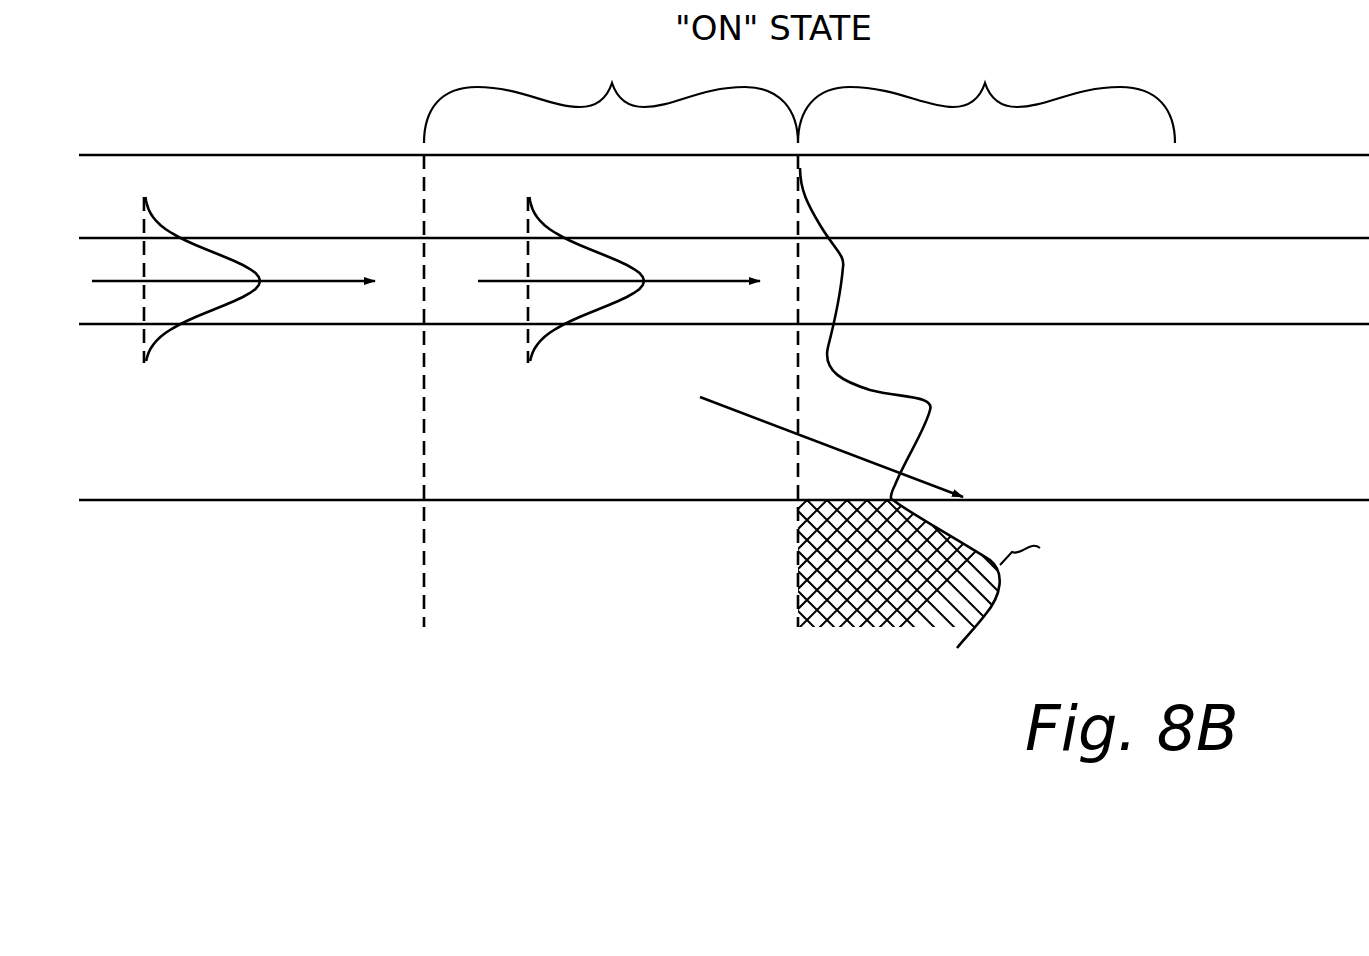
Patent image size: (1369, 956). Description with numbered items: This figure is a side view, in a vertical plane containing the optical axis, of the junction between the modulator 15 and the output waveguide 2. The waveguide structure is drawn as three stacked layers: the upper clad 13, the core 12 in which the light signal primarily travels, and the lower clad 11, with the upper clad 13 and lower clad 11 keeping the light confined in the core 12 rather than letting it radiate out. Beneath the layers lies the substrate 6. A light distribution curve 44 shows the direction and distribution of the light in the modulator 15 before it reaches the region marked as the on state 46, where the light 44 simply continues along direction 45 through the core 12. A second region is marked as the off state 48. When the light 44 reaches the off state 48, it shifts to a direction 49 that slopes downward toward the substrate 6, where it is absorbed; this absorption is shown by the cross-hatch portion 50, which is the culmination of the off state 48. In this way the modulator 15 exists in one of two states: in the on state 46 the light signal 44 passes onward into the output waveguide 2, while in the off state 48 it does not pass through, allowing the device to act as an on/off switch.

The modulator 15 is at (232, 153).
The upper clad 13 is at (1212, 215).
The core 12 is at (1212, 295).
The lower clad 11 is at (1212, 418).
The substrate 6 is at (1197, 598).
The output waveguide 2 is at (1128, 152).
The on state 46 is at (611, 90).
The off state 48 is at (986, 90).
The light distribution curve 44 is at (210, 312).
The direction 45 is at (290, 278).
The direction 49 is at (740, 412).
The cross-hatch portion 50 is at (985, 612).